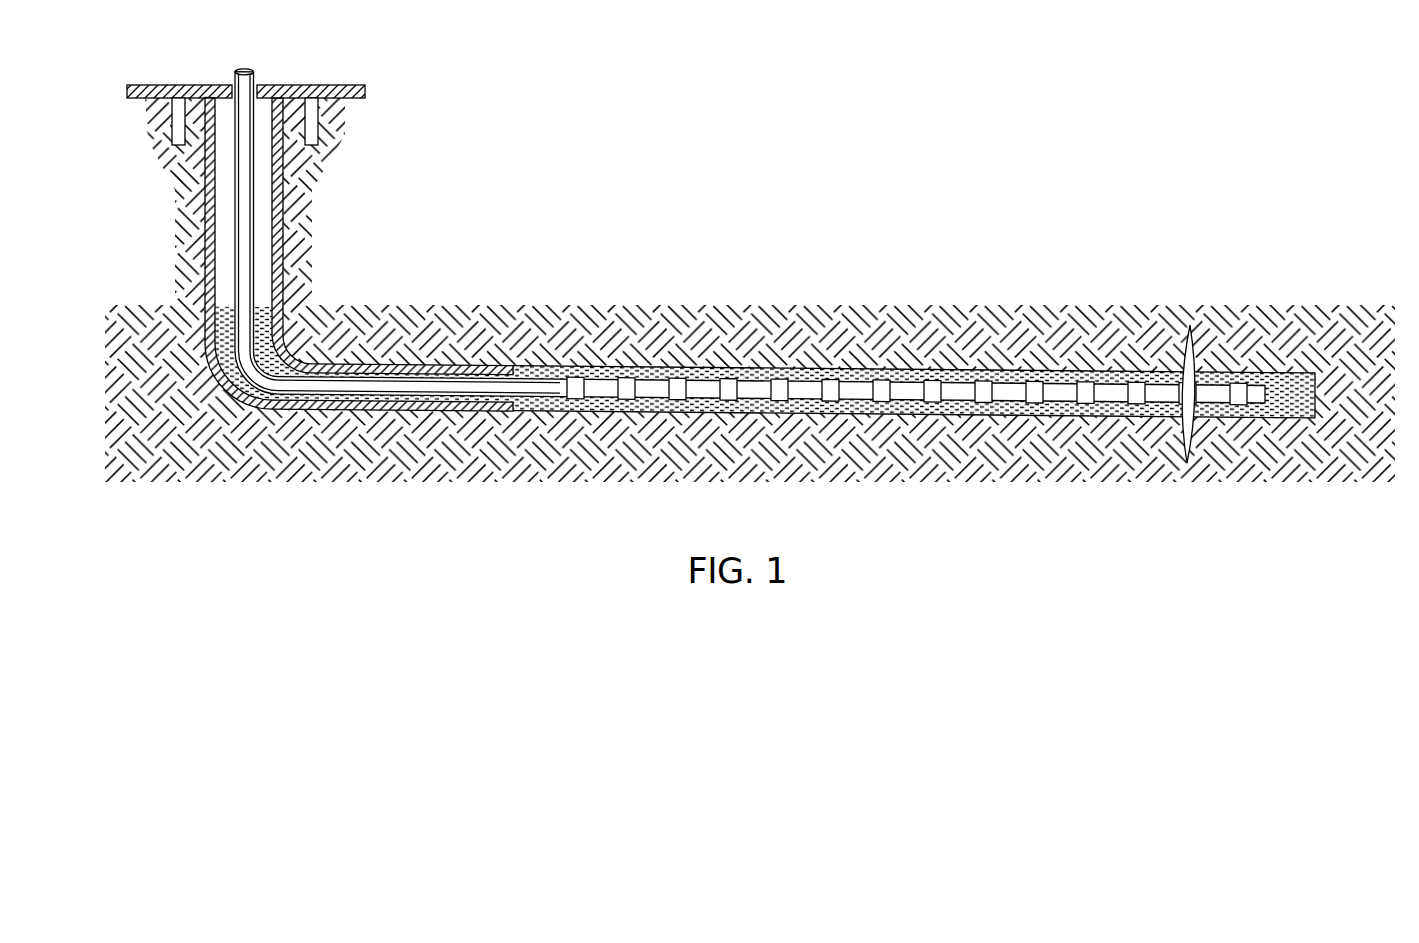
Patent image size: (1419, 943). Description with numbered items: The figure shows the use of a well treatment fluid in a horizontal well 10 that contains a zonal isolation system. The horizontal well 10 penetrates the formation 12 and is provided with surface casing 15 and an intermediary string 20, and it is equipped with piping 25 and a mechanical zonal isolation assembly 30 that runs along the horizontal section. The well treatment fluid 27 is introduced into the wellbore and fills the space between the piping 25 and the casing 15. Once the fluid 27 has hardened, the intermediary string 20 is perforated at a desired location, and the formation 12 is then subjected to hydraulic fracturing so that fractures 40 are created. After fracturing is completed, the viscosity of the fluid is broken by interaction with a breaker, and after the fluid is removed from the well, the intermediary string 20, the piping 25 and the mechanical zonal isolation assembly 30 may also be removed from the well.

The horizontal well 10 is at (1298, 390).
The formation 12 is at (933, 468).
The surface casing 15 is at (372, 96).
The intermediary string 20 is at (420, 412).
The piping 25 is at (545, 398).
The well treatment fluid 27 is at (748, 366).
The mechanical zonal isolation assembly 30 is at (933, 376).
The fractures 40 is at (1193, 343).